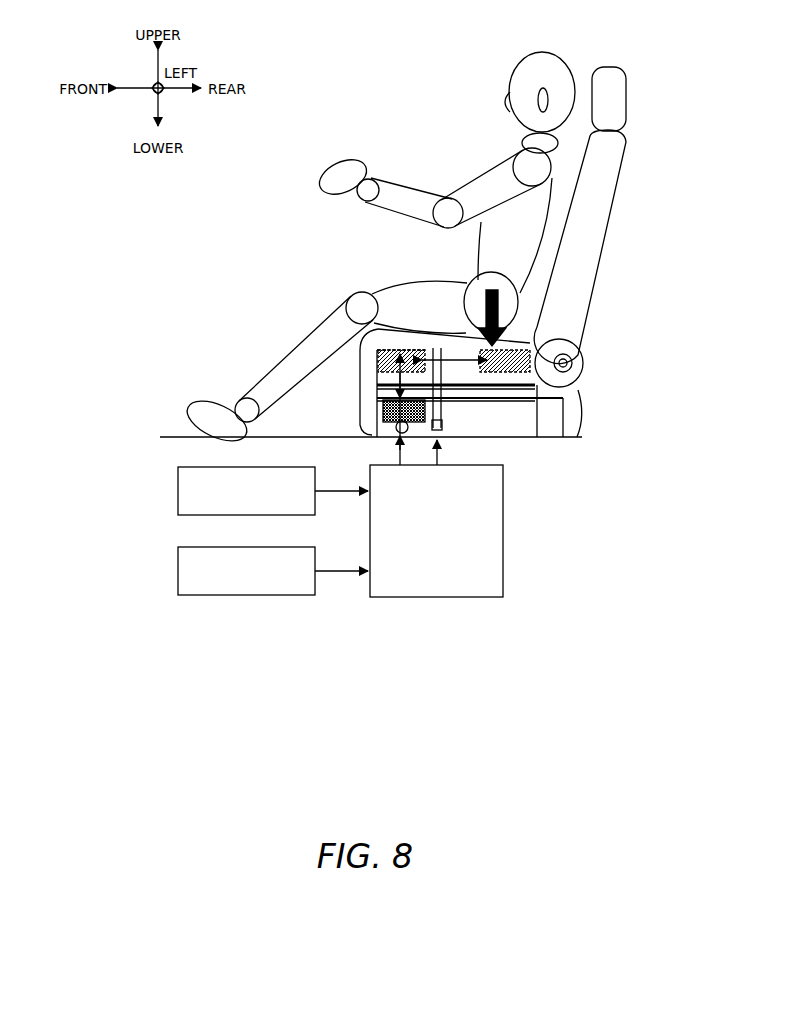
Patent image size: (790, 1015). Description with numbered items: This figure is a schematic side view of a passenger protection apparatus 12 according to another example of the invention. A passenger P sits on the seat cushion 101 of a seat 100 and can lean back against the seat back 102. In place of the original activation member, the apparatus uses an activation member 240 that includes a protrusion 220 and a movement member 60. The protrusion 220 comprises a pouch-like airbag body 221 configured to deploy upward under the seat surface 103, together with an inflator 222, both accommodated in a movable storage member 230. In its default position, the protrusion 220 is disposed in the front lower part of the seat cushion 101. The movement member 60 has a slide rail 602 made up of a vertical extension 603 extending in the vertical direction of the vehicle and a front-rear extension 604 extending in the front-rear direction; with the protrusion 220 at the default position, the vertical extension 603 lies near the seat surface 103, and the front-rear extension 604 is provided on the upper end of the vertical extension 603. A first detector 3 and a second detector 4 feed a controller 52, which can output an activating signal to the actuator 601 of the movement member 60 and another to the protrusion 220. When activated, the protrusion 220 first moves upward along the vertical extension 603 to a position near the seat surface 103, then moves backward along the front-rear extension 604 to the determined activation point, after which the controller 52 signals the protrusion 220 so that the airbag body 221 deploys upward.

The passenger P is at (435, 150).
The seat 100 is at (604, 250).
The seat cushion 101 is at (579, 365).
The seat back 102 is at (607, 177).
The seat surface 103 is at (543, 327).
The first detector 3 is at (178, 489).
The second detector 4 is at (178, 567).
The passenger protection apparatus 12 is at (558, 535).
The controller 52 is at (437, 598).
The movement member 60 is at (534, 435).
The actuator 601 is at (446, 414).
The slide rail 602 is at (618, 447).
The vertical extension 603 is at (446, 400).
The front-rear extension 604 is at (565, 405).
The protrusion 220 is at (212, 244).
The airbag body 221 is at (370, 436).
The inflator 222 is at (390, 436).
The storage member 230 is at (376, 418).
The activation member 240 is at (372, 437).